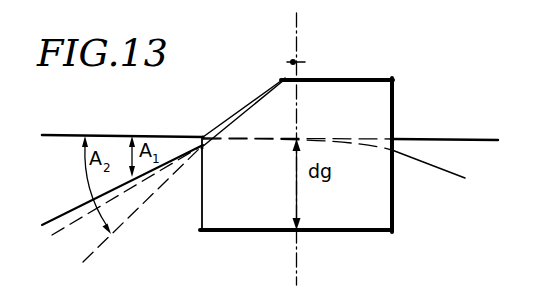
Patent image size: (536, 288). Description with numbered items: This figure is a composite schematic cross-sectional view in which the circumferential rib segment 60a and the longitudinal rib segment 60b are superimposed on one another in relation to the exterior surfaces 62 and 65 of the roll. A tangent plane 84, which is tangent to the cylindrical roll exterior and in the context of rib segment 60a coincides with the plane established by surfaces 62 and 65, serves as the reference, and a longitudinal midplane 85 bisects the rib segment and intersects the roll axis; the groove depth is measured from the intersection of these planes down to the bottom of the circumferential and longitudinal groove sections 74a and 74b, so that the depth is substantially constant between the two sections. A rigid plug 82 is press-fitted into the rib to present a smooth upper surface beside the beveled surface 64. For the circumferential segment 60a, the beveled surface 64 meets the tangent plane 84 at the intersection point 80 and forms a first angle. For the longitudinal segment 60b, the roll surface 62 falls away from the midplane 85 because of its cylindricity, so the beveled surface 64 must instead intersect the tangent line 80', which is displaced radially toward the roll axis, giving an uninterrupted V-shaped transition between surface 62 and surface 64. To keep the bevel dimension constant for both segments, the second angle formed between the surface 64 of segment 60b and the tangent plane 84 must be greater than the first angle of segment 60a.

The surface of roll 62 is at (61, 134).
The beveled surface 64 is at (253, 103).
The surface of roll 65 is at (422, 137).
The circumferential groove section 74a is at (294, 234).
The longitudinal groove section 74b is at (264, 224).
The circumferential rib segment 60a is at (309, 151).
The longitudinal rib segment 60b is at (309, 151).
The intersection point 80 is at (197, 118).
The tangent line 80' is at (224, 163).
The rigid plug 82 is at (346, 79).
The tangent plane 84 is at (119, 126).
The longitudinal midplane 85 is at (320, 59).